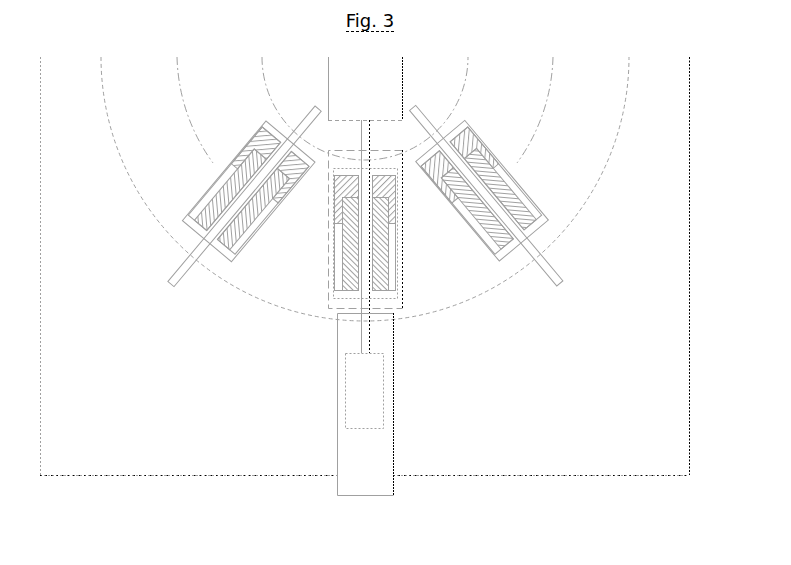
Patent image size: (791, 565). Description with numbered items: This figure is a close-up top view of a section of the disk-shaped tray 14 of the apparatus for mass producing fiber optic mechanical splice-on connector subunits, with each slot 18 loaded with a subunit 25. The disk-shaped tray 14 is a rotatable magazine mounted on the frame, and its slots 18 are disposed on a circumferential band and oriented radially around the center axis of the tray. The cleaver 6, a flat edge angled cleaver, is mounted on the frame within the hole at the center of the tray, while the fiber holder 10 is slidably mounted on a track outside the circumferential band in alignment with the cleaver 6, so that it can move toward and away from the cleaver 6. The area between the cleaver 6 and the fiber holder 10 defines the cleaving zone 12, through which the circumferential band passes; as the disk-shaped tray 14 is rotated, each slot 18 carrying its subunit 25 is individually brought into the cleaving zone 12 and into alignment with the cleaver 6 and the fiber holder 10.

The cleaver 6 is at (365, 89).
The fiber holder 10 is at (312, 404).
The cleaving zone 12 is at (365, 229).
The disk-shaped tray 14 is at (590, 112).
The slot 18 is at (346, 210).
The subunit 25 is at (352, 258).